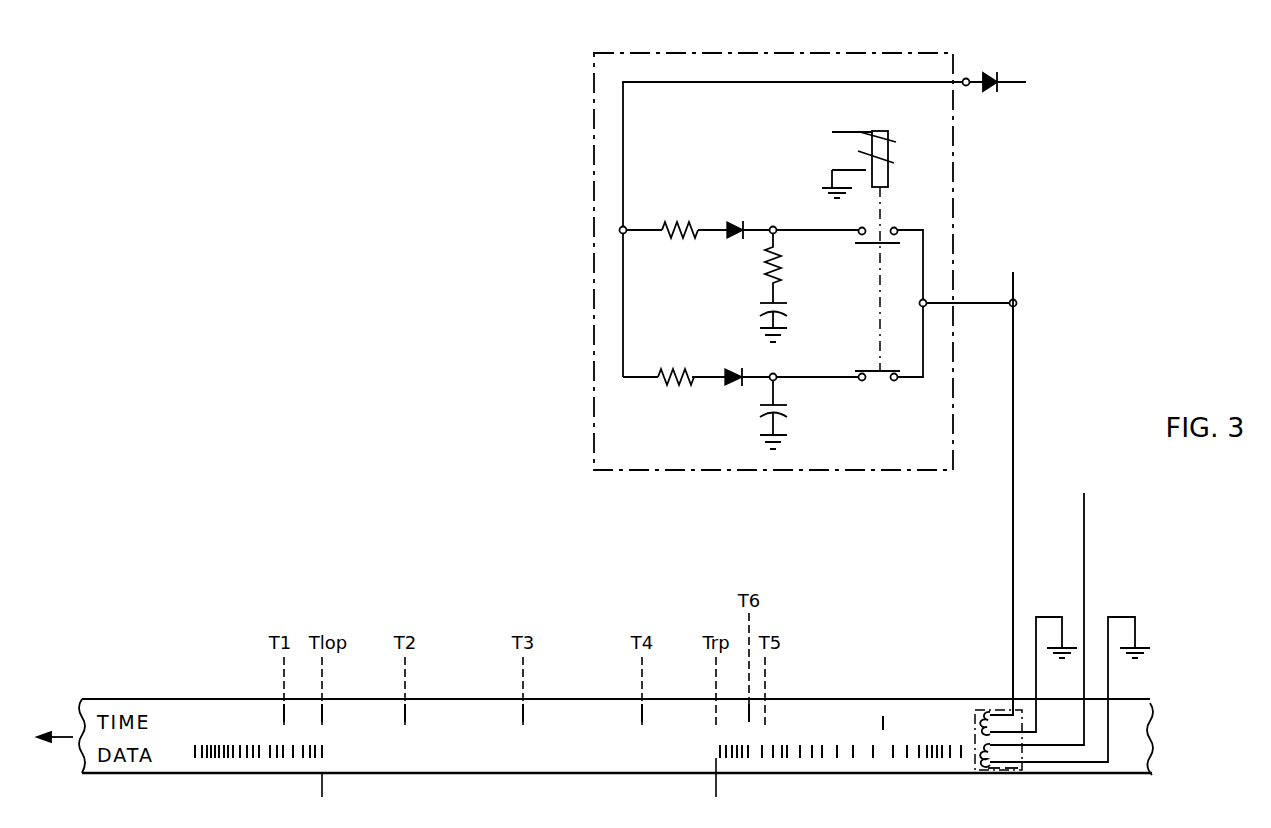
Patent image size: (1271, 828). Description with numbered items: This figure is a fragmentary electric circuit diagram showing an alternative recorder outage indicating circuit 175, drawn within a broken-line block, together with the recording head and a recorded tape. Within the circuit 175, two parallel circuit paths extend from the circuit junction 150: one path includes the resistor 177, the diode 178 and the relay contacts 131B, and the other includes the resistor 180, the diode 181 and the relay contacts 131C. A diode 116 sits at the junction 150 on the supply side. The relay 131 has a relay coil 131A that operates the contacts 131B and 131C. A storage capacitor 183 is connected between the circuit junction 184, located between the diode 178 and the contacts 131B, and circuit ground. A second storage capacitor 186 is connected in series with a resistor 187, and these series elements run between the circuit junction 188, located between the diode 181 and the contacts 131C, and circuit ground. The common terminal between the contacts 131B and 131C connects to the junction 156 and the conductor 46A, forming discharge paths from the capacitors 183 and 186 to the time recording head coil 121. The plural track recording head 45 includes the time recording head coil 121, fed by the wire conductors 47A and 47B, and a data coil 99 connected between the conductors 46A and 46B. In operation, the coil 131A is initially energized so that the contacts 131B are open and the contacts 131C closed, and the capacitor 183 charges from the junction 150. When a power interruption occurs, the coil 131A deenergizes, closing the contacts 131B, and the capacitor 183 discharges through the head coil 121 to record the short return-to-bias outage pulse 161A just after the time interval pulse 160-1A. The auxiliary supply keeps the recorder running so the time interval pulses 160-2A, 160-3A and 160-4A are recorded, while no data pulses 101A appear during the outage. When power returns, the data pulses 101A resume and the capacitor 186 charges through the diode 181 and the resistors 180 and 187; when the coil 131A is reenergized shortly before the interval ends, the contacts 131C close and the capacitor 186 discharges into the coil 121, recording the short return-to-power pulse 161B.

The recorder outage indicating circuit 175 is at (717, 53).
The circuit junction 150 is at (967, 79).
The diode 116 is at (993, 93).
The relay coil 131 is at (882, 119).
The relay coil 131A is at (890, 163).
The relay contacts 131B is at (866, 383).
The relay contacts 131C is at (856, 235).
The resistor 180 is at (680, 240).
The diode 181 is at (728, 222).
The circuit junction 188 is at (774, 226).
The resistor 187 is at (763, 262).
The second storage capacitor 186 is at (760, 312).
The resistor 177 is at (672, 368).
The diode 178 is at (728, 385).
The circuit junction 184 is at (776, 374).
The storage capacitor 183 is at (760, 409).
The circuit junction 156 is at (1016, 301).
The wire conductor 47A is at (1013, 524).
The wire conductor 47B is at (1036, 625).
The wire conductor 46A is at (1085, 535).
The wire conductor 46B is at (1109, 690).
The time recording head coil 121 is at (990, 711).
The coil 99 is at (994, 772).
The plural track recording head 45 is at (1013, 773).
The time interval pulse 160-1A is at (283, 720).
The outage pulse 161A is at (323, 720).
The time interval pulse 160-2A is at (406, 720).
The time interval pulse 160-3A is at (524, 720).
The time interval pulse 160-4A is at (641, 722).
The return-to-power pulse 161B is at (748, 722).
The data pulses 101A is at (270, 759).